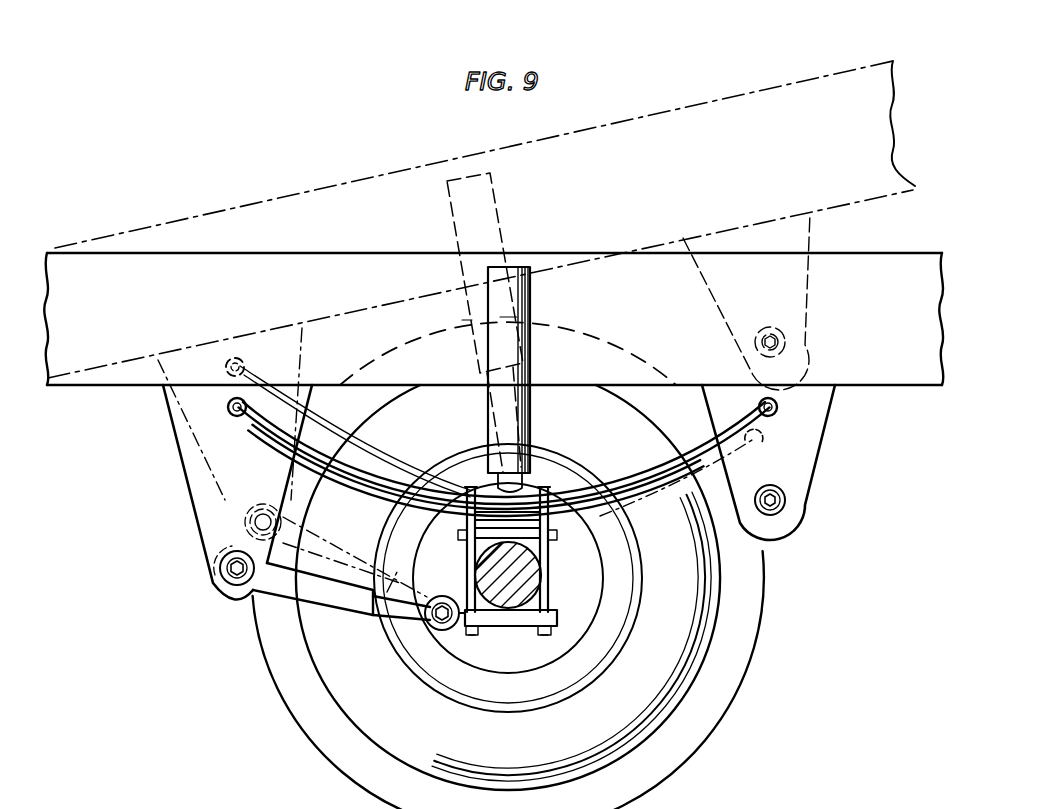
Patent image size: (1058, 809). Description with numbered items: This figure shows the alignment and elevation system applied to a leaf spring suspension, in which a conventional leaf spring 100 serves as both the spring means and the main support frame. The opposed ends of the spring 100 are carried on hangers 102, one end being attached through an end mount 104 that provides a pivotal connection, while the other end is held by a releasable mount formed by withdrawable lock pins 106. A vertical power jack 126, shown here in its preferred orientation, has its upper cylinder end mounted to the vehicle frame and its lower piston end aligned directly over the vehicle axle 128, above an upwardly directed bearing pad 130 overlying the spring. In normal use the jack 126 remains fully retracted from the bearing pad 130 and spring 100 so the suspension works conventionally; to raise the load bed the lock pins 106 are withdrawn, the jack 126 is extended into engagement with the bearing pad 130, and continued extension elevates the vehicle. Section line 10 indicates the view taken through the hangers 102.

The section line 10- 10 is at (723, 172).
The leaf spring 100 is at (619, 488).
The hangers 102 is at (201, 510).
The end mount 104 is at (240, 417).
The lock pins 106 is at (779, 412).
The power jack 126 is at (531, 293).
The vehicle axle 128 is at (524, 584).
The bearing pad 130 is at (528, 489).